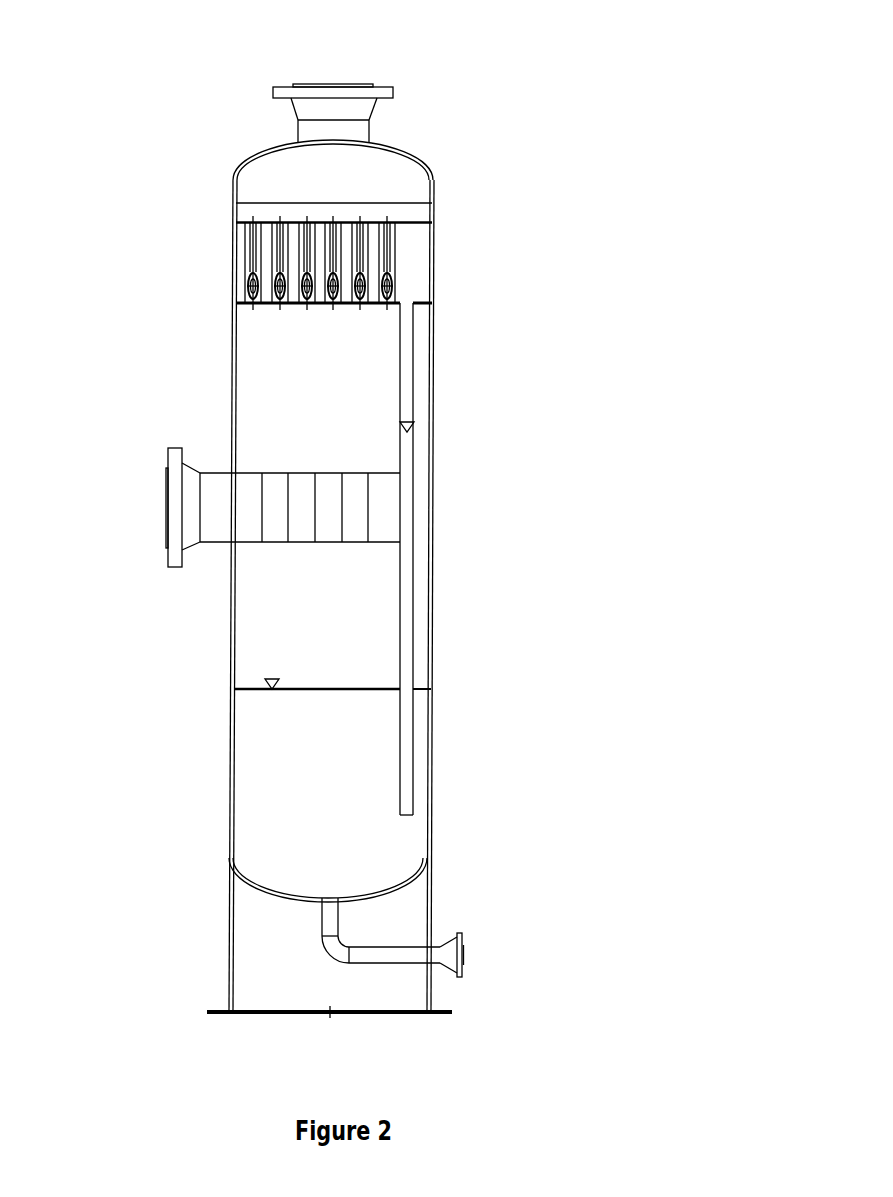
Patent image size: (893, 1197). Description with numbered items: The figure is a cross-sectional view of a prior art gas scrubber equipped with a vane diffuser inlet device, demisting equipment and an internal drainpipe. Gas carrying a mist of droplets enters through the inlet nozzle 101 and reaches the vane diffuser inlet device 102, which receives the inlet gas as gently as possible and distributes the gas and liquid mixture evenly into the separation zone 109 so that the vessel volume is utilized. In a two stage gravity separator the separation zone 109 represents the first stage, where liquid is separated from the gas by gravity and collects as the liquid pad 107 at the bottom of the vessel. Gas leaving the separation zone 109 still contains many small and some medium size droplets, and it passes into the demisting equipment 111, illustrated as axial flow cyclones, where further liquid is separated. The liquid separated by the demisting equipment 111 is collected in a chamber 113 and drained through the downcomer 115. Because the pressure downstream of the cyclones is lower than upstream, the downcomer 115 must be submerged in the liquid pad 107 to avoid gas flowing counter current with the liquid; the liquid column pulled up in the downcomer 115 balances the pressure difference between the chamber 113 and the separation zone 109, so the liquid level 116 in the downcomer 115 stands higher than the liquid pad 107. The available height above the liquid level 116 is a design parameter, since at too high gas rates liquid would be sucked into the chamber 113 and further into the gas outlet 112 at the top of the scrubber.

The inlet nozzle 101 is at (163, 508).
The vane diffuser inlet device 102 is at (283, 490).
The liquid pad 107 is at (268, 680).
The separation zone 109 is at (340, 416).
The demisting equipment 111 is at (250, 262).
The gas outlet 112 is at (335, 83).
The chamber 113 is at (413, 272).
The downcomer 115 is at (410, 585).
The liquid level 116 is at (415, 427).